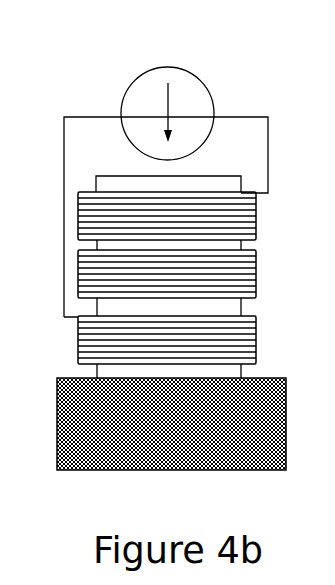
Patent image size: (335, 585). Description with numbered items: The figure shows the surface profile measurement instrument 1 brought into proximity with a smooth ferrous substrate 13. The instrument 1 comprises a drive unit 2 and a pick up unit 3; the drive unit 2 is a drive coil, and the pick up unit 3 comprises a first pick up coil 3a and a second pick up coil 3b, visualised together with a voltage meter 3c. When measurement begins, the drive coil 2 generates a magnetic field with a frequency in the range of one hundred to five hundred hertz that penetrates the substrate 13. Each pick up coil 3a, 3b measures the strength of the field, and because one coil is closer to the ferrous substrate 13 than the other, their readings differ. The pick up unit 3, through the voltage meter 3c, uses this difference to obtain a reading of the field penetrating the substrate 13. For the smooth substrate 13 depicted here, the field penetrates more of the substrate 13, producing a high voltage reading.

The surface profile measurement instrument 1 is at (110, 85).
The drive unit 2 is at (88, 285).
The pick up unit 3 is at (330, 391).
The first pick up coil 3a is at (87, 207).
The second pick up coil 3b is at (88, 340).
The voltage meter 3c is at (199, 99).
The substrate 13 is at (287, 437).